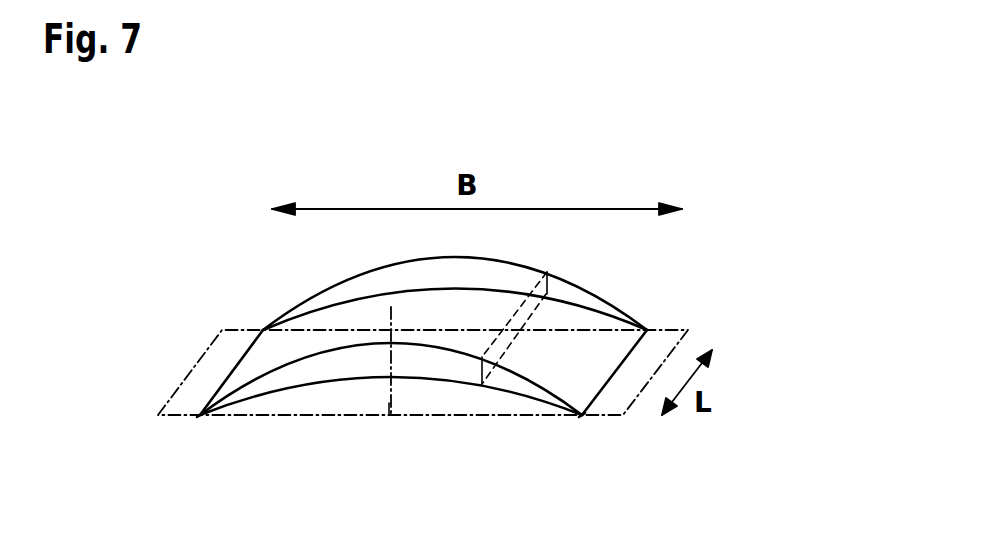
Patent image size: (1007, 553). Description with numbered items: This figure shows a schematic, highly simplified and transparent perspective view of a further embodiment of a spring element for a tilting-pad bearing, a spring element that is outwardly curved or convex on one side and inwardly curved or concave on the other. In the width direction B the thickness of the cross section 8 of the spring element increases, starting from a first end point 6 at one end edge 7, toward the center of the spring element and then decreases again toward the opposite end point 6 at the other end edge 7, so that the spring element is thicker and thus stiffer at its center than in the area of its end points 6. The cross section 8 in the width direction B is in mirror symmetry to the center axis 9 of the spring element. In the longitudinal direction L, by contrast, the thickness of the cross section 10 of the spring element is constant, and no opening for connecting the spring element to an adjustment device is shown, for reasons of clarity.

The end point 6 is at (230, 372).
The end edge 7 is at (200, 415).
The cross section 8 is at (442, 363).
The center axis 9 is at (389, 405).
The cross section 10 is at (556, 274).